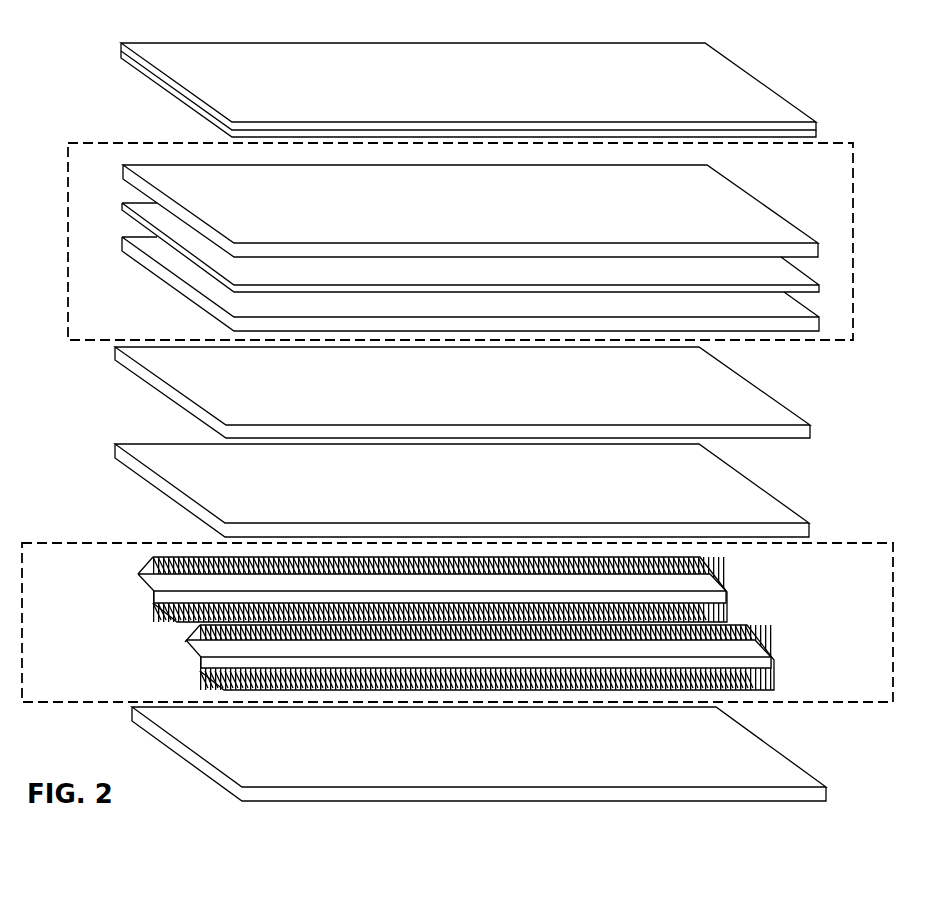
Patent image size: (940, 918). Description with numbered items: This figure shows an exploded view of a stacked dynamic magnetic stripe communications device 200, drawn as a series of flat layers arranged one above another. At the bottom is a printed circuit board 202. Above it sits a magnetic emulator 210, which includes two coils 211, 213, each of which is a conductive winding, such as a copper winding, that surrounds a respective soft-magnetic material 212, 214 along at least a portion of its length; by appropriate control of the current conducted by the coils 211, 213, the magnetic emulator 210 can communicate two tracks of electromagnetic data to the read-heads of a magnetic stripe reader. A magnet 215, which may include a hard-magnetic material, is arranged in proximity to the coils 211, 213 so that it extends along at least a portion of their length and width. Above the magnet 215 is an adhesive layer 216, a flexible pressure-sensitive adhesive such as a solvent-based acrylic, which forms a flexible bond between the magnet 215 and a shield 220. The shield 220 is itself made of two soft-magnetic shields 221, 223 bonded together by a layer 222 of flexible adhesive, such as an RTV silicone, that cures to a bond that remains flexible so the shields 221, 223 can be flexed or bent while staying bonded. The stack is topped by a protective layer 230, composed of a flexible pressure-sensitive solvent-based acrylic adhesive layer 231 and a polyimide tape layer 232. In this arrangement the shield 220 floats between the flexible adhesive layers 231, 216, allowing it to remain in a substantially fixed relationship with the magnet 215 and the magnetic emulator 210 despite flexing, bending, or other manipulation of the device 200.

The stacked dynamic magnetic stripe communications device 200 is at (900, 412).
The printed circuit board 202 is at (198, 765).
The magnetic emulator 210 is at (88, 542).
The coil 211 is at (226, 679).
The material 212 is at (186, 651).
The coil 213 is at (178, 613).
The material 214 is at (139, 583).
The magnet 215 is at (120, 443).
The adhesive layer 216 is at (128, 372).
The shield 220 is at (137, 143).
The shield 221 is at (123, 245).
The layer 222 is at (123, 209).
The shield 223 is at (123, 172).
The protective layer 230 is at (145, 43).
The adhesive layer 231 is at (135, 65).
The tape layer 232 is at (167, 83).